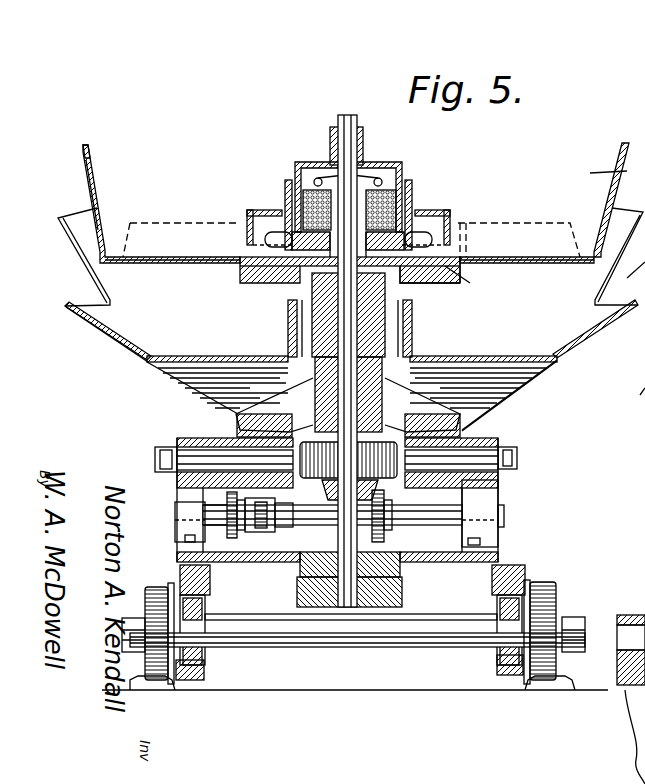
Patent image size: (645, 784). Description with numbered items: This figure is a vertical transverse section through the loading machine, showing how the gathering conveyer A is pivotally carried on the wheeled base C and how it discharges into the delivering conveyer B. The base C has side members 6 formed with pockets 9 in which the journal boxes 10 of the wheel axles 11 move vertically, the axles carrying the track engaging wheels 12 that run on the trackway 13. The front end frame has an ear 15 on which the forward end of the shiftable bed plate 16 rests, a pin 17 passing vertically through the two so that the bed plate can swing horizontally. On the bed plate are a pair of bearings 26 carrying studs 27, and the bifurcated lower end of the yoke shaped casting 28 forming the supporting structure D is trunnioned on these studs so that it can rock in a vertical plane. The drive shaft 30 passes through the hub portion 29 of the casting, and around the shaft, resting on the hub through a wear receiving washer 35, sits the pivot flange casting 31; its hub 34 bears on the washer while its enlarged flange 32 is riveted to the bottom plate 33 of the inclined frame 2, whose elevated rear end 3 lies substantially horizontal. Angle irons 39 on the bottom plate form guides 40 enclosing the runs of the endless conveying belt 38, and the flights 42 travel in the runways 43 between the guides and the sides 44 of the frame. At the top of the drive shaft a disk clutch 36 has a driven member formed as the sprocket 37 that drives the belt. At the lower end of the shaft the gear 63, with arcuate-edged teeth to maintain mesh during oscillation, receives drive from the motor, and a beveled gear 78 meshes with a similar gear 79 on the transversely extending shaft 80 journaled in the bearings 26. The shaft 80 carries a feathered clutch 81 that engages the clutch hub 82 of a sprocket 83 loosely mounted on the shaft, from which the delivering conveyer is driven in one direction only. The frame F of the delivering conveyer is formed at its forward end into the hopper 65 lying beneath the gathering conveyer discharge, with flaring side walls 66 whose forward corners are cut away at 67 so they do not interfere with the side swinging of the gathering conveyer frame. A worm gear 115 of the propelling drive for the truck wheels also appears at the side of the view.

The gathering conveyer A is at (95, 175).
The loading or delivering conveyer B is at (145, 350).
The portable supporting base C is at (215, 660).
The supporting structure D is at (468, 352).
The frame F is at (560, 364).
The inclined frame 2 is at (548, 265).
The elevated rear end 3 is at (158, 264).
The side members 6 is at (180, 575).
The pockets 9 is at (206, 606).
The journal boxes 10 is at (192, 683).
The wheel axles 11 is at (340, 647).
The track engaging wheels 12 is at (145, 600).
The trackway 13 is at (142, 690).
The ear 15 is at (395, 592).
The shiftable bed plate 16 is at (178, 530).
The pin 17 is at (300, 575).
The bearings 26 is at (176, 480).
The studs 27 is at (210, 448).
The yoke shaped casting 28 is at (262, 384).
The hub portion 29 is at (395, 350).
The drive shaft 30 is at (305, 290).
The pivot flange casting 31 is at (410, 290).
The enlarged flange 32 is at (474, 282).
The bottom plate 33 is at (510, 252).
The hub 34 is at (448, 283).
The wear receiving washer 35 is at (290, 330).
The disk clutch 36 is at (392, 180).
The sprocket 37 is at (445, 228).
The endless conveying belt 38 is at (248, 210).
The angle irons 39 is at (258, 212).
The guides 40 is at (442, 210).
The flights 42 is at (172, 224).
The runways 43 is at (116, 188).
The sides 44 is at (82, 151).
The gear 63 is at (328, 504).
The hopper 65 is at (525, 382).
The flaring side walls 66 is at (103, 338).
The cutaway corners 67 is at (80, 282).
The beveled gear 78 is at (468, 436).
The beveled gear 79 is at (393, 536).
The transversely extending shaft 80 is at (500, 498).
The feathered clutch 81 is at (230, 500).
The clutch hub 82 is at (240, 540).
The sprocket 83 is at (176, 512).
The worm gear 115 is at (636, 752).